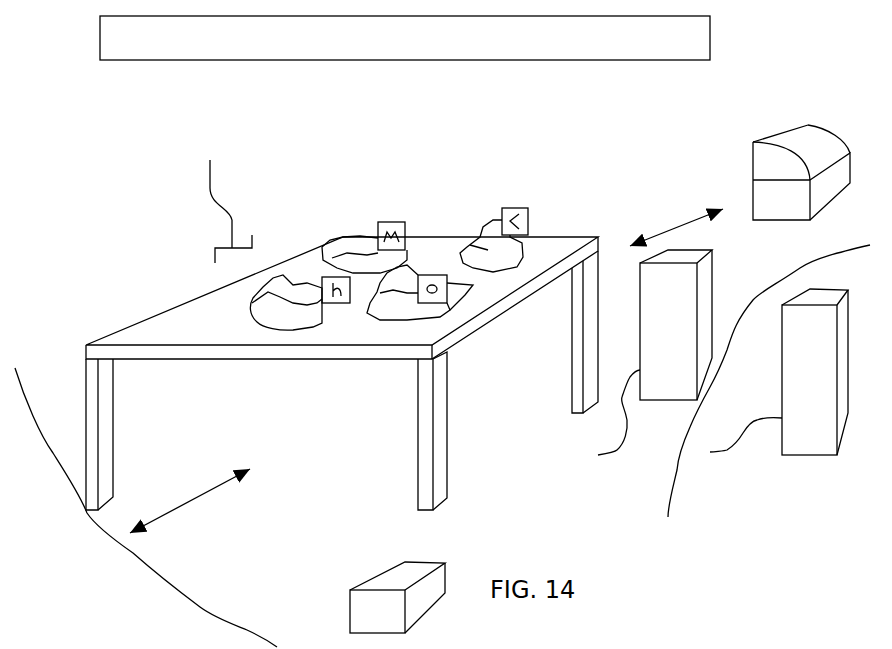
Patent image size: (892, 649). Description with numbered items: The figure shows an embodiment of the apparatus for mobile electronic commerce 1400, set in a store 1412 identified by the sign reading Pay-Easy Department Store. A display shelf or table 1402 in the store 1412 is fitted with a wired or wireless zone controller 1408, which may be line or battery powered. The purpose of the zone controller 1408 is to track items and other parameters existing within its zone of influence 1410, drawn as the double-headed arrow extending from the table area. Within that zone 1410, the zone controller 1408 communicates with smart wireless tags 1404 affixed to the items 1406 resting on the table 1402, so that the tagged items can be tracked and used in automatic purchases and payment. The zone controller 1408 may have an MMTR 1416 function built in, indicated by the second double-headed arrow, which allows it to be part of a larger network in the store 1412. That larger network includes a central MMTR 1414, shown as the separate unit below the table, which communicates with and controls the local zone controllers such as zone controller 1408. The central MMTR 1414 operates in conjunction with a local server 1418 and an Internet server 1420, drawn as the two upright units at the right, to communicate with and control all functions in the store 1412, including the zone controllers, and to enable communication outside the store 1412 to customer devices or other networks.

The apparatus for mobile electronic commerce 1400 is at (220, 196).
The display shelf or table 1402 is at (170, 292).
The smart wireless tags 1404 is at (437, 273).
The items 1406 is at (488, 248).
The zone controller 1408 is at (738, 155).
The zone of influence 1410 is at (197, 510).
The store 1412 is at (323, 72).
The central MMTR 1414 is at (445, 550).
The MMTR function 1416 is at (740, 197).
The local server 1418 is at (738, 262).
The Internet server 1420 is at (765, 452).